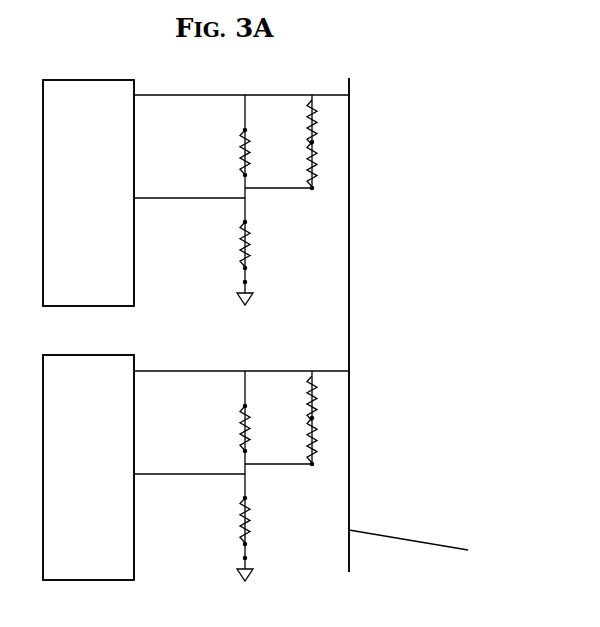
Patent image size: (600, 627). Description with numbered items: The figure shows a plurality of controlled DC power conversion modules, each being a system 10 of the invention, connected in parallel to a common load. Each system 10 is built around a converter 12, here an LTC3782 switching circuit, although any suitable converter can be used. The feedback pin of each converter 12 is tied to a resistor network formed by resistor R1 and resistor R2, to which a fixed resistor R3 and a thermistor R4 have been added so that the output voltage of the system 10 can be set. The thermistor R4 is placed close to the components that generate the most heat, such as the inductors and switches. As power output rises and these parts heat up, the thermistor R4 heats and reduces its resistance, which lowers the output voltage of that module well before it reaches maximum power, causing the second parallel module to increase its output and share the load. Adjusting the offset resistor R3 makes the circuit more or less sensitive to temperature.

The system 10 is at (333, 323).
The converter 12 is at (88, 330).
The resistor R1 is at (255, 152).
The resistor R2 is at (255, 244).
The fixed resistor R3 is at (323, 122).
The thermistor R4 is at (323, 164).